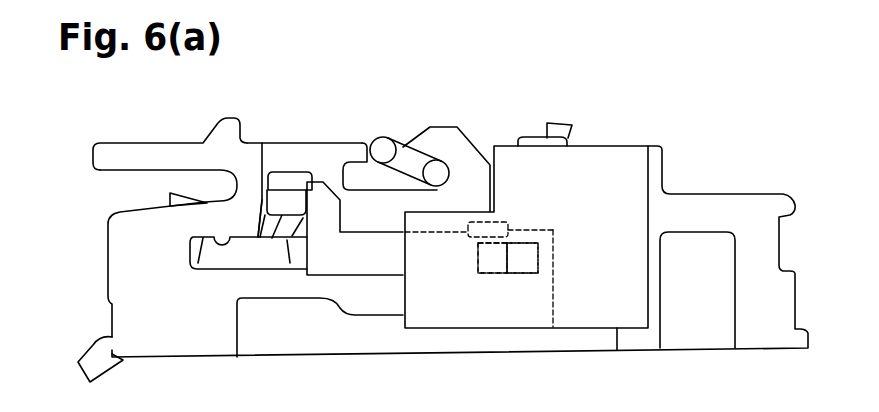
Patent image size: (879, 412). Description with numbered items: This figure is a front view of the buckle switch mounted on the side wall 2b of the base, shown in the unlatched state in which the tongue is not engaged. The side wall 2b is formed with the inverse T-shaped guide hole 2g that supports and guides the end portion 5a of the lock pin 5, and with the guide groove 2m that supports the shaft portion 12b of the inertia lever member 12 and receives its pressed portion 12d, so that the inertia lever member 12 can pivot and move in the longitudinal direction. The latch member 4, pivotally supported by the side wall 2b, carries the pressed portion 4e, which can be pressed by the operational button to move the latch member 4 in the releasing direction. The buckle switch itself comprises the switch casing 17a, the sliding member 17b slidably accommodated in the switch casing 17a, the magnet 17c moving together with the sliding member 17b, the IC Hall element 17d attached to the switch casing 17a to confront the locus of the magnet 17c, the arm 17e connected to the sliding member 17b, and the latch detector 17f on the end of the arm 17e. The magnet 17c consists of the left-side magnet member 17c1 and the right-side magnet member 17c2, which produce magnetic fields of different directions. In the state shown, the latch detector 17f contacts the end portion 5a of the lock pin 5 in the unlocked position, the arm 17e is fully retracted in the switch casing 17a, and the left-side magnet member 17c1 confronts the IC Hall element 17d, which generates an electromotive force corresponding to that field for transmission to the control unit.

The inverse T-shaped guide hole 2g is at (226, 243).
The lock pin 5 is at (268, 195).
The side wall 2b is at (273, 152).
The inertia lever member 12 is at (279, 178).
The end portion of the lock pin 5a is at (285, 198).
The latch detector 17f is at (320, 201).
The guide groove 2m is at (352, 163).
The pressed portion 12d is at (387, 148).
The shaft portion 12b is at (432, 165).
The pressed portion 4e is at (548, 123).
The switch casing 17a is at (613, 160).
The IC Hall element 17d is at (507, 220).
The magnet 17c is at (474, 262).
The left-side magnet member 17c1 is at (488, 273).
The right-side magnet member 17c2 is at (530, 273).
The sliding member 17b is at (555, 282).
The latch member 4 is at (283, 229).
The arm 17e is at (377, 268).